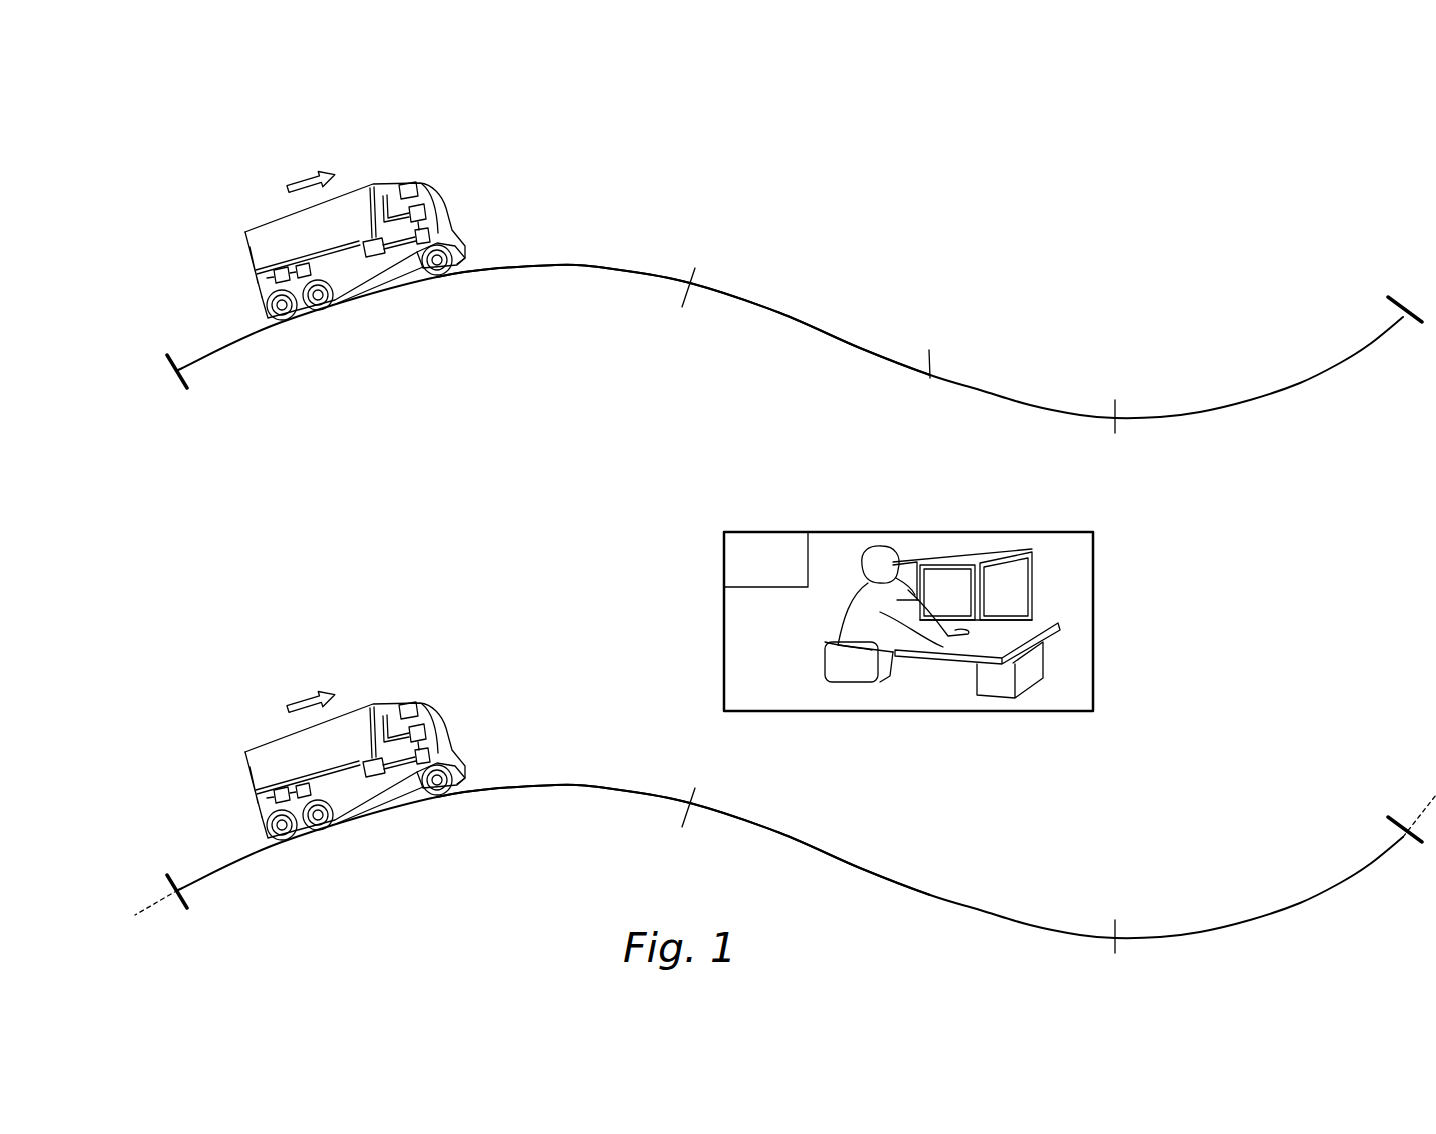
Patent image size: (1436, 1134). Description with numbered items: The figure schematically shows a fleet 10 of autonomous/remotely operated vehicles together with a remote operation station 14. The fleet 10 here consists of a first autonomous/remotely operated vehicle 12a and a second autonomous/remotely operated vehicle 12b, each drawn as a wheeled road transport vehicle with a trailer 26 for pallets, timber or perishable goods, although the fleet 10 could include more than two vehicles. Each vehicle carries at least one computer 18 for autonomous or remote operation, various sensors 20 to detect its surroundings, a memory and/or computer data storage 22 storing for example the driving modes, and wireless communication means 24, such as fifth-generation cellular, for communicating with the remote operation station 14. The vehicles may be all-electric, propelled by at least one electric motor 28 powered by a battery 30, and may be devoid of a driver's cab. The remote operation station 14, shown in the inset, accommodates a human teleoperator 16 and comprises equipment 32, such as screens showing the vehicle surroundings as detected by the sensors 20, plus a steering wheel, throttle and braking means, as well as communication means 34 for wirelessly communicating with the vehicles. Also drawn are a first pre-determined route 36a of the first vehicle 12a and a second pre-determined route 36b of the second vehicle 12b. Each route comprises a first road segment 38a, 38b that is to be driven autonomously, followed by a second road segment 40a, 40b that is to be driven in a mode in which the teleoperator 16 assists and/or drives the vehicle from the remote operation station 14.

The fleet 10 is at (201, 650).
The first autonomous/remotely operated vehicle 12a is at (505, 148).
The second autonomous/remotely operated vehicle 12b is at (492, 618).
The remote operation station 14 is at (1094, 652).
The teleoperator 16 is at (860, 602).
The computer 18 is at (384, 250).
The sensors 20 is at (452, 236).
The memory and/or computer data storage 22 is at (447, 206).
The wireless communication means 24 is at (408, 185).
The trailer 26 is at (271, 232).
The electric motor 28 is at (267, 278).
The battery 30 is at (312, 263).
The equipment 32 is at (963, 588).
The communication means 34 is at (765, 548).
The first pre-determined route 36a is at (848, 366).
The second pre-determined route 36b is at (1354, 906).
The first road segment 38a is at (573, 268).
The first road segment 38b is at (573, 788).
The second road segment 40a is at (822, 330).
The second road segment 40b is at (925, 893).